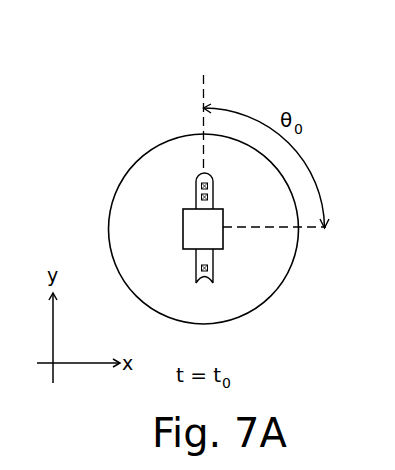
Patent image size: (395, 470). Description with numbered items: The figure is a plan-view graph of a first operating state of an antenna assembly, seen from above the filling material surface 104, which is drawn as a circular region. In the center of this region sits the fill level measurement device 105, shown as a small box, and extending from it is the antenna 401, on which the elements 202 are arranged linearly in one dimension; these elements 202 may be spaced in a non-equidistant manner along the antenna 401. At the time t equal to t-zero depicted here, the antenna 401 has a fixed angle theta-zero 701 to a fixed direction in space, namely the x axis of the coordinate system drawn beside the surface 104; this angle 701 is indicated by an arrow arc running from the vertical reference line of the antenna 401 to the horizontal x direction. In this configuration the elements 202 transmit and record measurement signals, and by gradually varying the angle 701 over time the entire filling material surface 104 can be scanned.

The filling material surface 104 is at (253, 297).
The fill level measurement device 105 is at (183, 229).
The elements 202 is at (196, 185).
The antenna 401 is at (213, 266).
The fixed angle θ0 701 is at (297, 117).